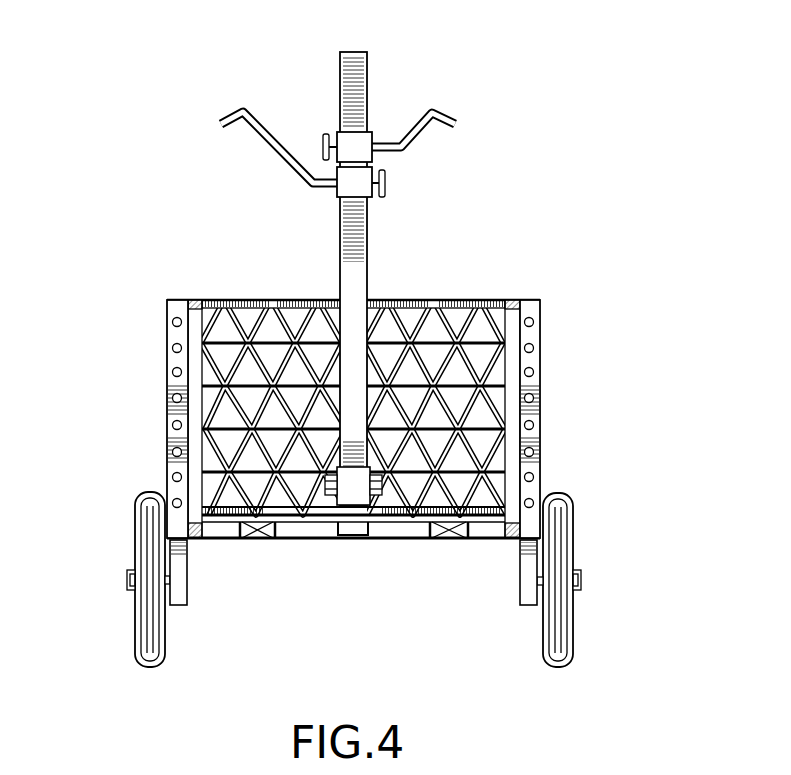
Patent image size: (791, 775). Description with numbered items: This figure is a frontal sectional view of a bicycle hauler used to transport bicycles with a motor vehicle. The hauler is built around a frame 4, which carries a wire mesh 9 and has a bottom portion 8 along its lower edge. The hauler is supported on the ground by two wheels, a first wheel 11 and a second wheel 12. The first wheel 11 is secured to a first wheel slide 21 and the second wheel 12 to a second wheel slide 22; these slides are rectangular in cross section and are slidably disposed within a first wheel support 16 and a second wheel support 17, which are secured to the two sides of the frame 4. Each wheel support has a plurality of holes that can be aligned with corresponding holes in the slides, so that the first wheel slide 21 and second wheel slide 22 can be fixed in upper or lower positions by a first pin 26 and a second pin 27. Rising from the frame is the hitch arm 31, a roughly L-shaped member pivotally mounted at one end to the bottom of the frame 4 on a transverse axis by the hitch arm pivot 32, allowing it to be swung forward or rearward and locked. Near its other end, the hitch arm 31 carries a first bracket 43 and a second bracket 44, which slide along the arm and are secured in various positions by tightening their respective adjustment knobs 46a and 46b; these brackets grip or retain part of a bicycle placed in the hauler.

The frame 4 is at (485, 305).
The bottom portion 8 is at (420, 517).
The wire mesh 9 is at (277, 343).
The first wheel 11 is at (563, 552).
The second wheel 12 is at (148, 550).
The first wheel support 16 is at (540, 357).
The second wheel support 17 is at (168, 358).
The first wheel slide 21 is at (528, 576).
The second wheel slide 22 is at (178, 575).
The first pin 26 is at (532, 425).
The second pin 27 is at (174, 425).
The hitch arm 31 is at (368, 243).
The hitch arm pivot 32 is at (328, 485).
The first bracket 43 is at (443, 112).
The second bracket 44 is at (224, 116).
The adjustment knob 46a is at (386, 183).
The adjustment knob 46b is at (322, 135).